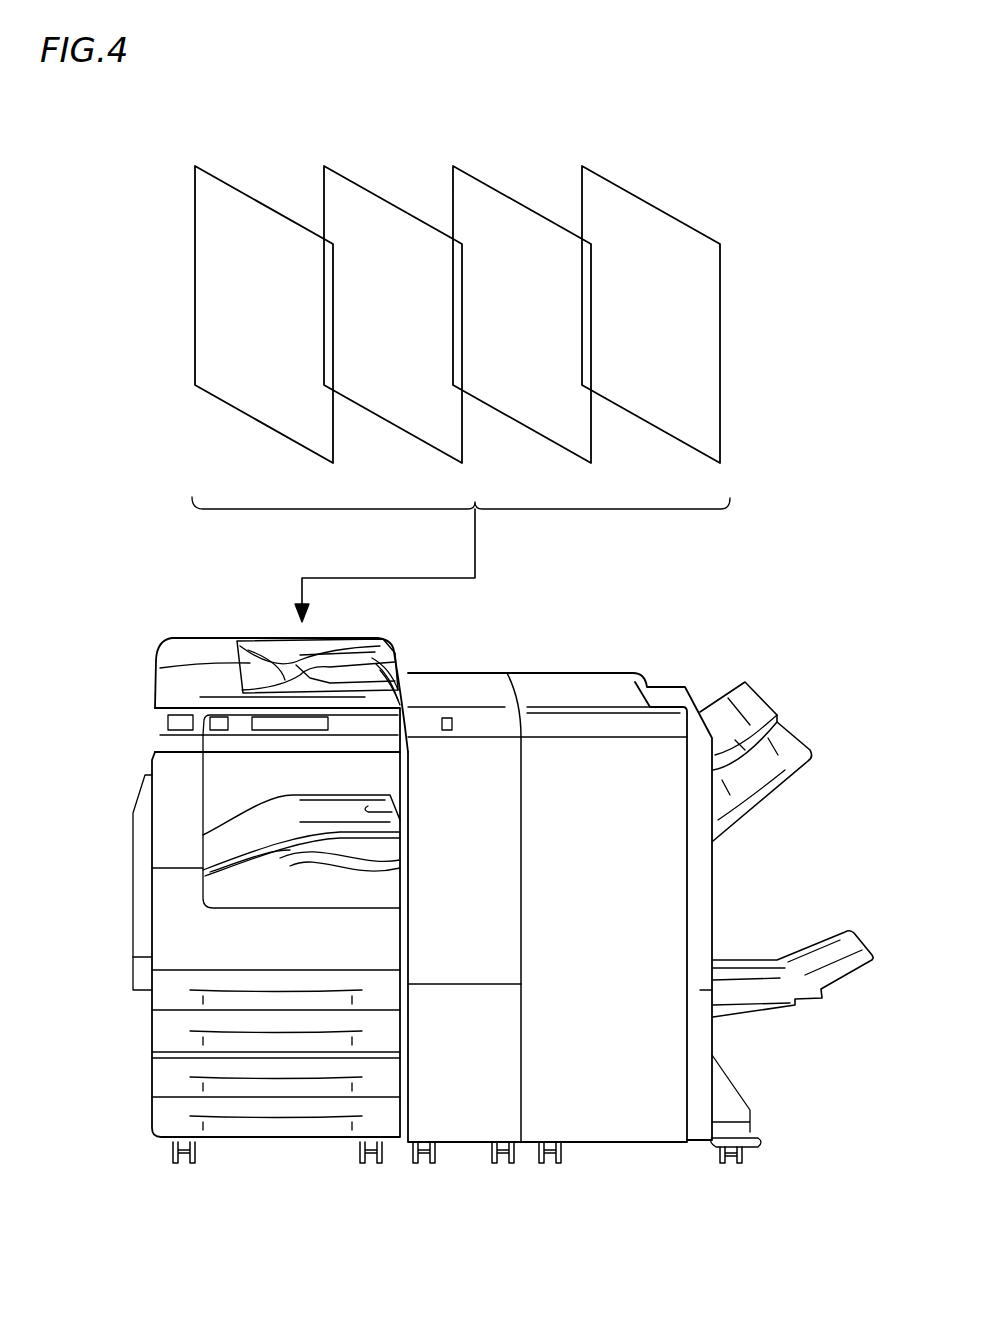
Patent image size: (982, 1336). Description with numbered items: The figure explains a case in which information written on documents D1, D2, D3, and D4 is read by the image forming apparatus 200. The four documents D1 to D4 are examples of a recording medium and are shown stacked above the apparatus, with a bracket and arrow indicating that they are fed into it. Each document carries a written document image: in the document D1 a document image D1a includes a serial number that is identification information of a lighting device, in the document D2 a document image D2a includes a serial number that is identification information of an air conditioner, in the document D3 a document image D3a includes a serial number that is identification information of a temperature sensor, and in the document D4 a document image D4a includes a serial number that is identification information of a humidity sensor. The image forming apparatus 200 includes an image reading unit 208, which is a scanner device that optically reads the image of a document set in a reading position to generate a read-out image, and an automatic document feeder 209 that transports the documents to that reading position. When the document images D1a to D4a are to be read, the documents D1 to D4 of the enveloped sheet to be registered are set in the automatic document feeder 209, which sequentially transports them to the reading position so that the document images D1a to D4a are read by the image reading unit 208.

The document D1 is at (252, 195).
The document D2 is at (383, 195).
The document D3 is at (516, 195).
The document D4 is at (645, 195).
The document image D1a is at (237, 322).
The document image D2a is at (372, 380).
The document image D3a is at (506, 380).
The document image D4a is at (697, 355).
The image forming apparatus 200 is at (472, 657).
The image reading unit 208 is at (365, 727).
The automatic document feeder 209 is at (197, 650).